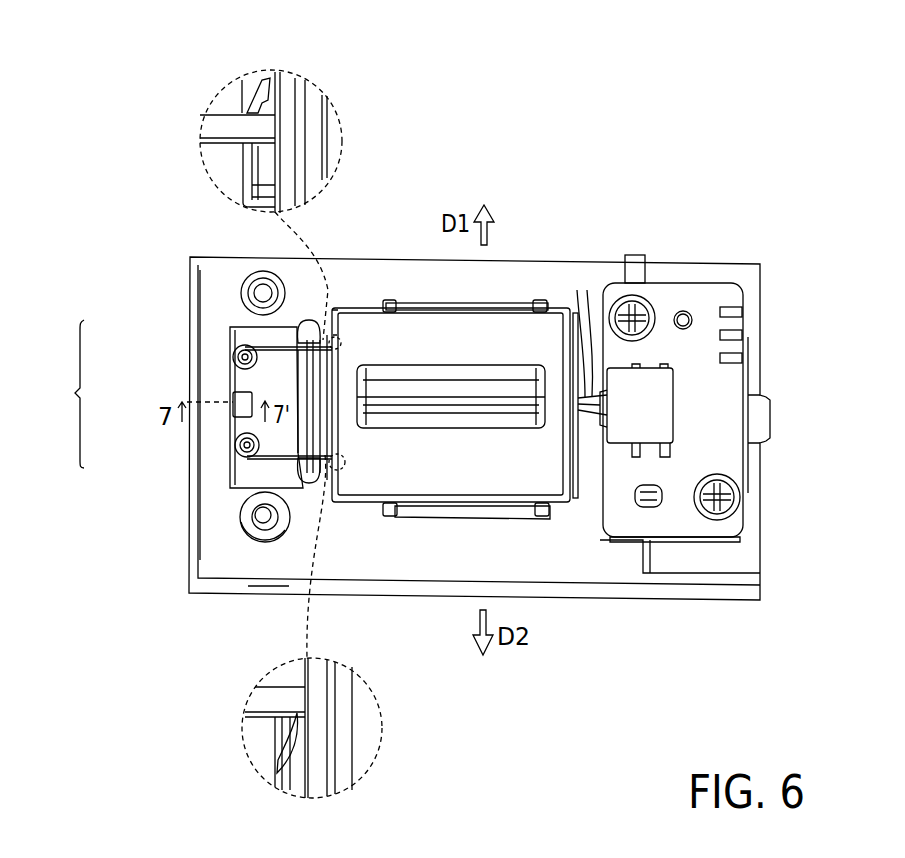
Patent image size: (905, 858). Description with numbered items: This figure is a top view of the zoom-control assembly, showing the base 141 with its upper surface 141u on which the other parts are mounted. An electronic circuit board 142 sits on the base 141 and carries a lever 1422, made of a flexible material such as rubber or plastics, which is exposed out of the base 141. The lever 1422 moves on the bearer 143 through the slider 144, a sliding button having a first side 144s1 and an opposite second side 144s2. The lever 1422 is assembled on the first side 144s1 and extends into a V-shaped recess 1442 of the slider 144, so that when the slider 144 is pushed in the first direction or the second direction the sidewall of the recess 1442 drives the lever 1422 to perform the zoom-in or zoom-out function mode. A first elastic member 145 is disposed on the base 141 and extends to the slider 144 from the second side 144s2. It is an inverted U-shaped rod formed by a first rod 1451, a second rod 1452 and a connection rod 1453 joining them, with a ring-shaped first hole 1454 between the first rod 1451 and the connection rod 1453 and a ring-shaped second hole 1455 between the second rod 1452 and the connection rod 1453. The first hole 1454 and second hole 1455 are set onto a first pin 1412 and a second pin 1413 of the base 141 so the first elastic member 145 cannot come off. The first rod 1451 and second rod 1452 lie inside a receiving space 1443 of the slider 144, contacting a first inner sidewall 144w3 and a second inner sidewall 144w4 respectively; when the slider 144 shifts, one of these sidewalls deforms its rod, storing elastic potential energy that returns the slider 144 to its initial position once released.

The base 141 is at (227, 587).
The upper surface of base plate 141u is at (213, 543).
The first pin 1412 is at (297, 330).
The second pin 1413 is at (310, 475).
The electronic circuit board 142 is at (727, 297).
The lever 1422 is at (640, 403).
The bearer 143 is at (538, 522).
The slider 144 is at (377, 480).
The first side 144s1 is at (577, 290).
The second side 144s2 is at (330, 306).
The first inner sidewall 144w3 is at (262, 103).
The second inner sidewall 144w4 is at (297, 737).
The recess 1442 is at (588, 292).
The receiving space 1443 is at (265, 167).
The first elastic member 145 is at (184, 403).
The first rod 1451 is at (250, 385).
The second rod 1452 is at (233, 422).
The connection rod 1453 is at (250, 380).
The first hole 1454 is at (240, 357).
The second hole 1455 is at (248, 442).